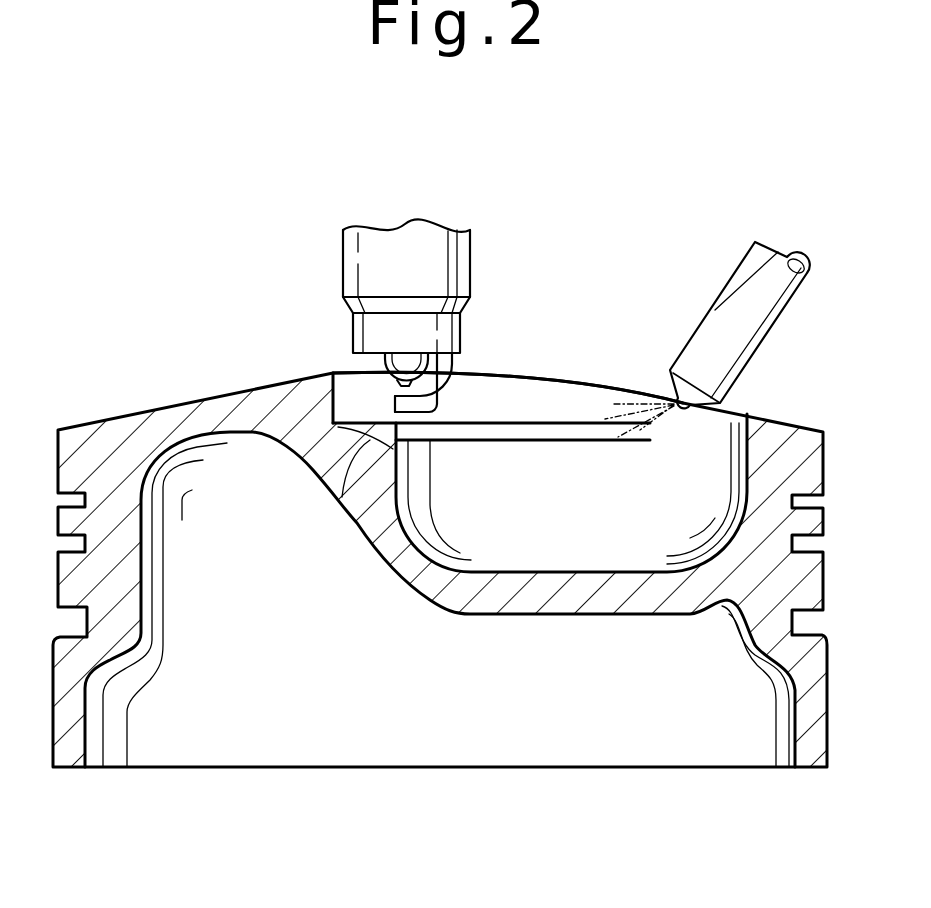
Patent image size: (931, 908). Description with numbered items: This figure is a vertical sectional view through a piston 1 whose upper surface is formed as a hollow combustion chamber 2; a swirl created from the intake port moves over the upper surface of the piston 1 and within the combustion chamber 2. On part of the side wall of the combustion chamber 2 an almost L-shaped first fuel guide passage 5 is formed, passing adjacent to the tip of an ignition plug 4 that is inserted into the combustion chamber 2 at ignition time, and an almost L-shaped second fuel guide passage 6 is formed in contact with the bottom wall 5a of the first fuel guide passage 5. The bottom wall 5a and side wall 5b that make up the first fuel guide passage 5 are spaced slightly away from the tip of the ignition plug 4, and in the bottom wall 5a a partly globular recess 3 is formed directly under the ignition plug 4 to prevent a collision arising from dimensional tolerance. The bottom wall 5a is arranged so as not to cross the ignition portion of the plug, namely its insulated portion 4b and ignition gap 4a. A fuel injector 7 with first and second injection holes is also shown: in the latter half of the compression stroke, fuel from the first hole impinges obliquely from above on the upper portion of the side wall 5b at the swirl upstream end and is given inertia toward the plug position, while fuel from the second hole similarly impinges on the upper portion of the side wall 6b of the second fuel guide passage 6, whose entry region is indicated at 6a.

The piston 1 is at (130, 427).
The combustion chamber 2 is at (717, 492).
The partly globular recess 3 is at (342, 497).
The ignition plug 4 is at (455, 255).
The ignition gap 4a is at (397, 393).
The insulated portion 4b is at (400, 358).
The first fuel guide passage 5 is at (558, 368).
The bottom wall 5a is at (508, 414).
The side wall 5b is at (485, 387).
The second fuel guide passage 6 is at (551, 452).
The second fuel guide passage inlet portion 6a is at (537, 432).
The side wall 6b is at (473, 433).
The fuel injector 7 is at (787, 307).